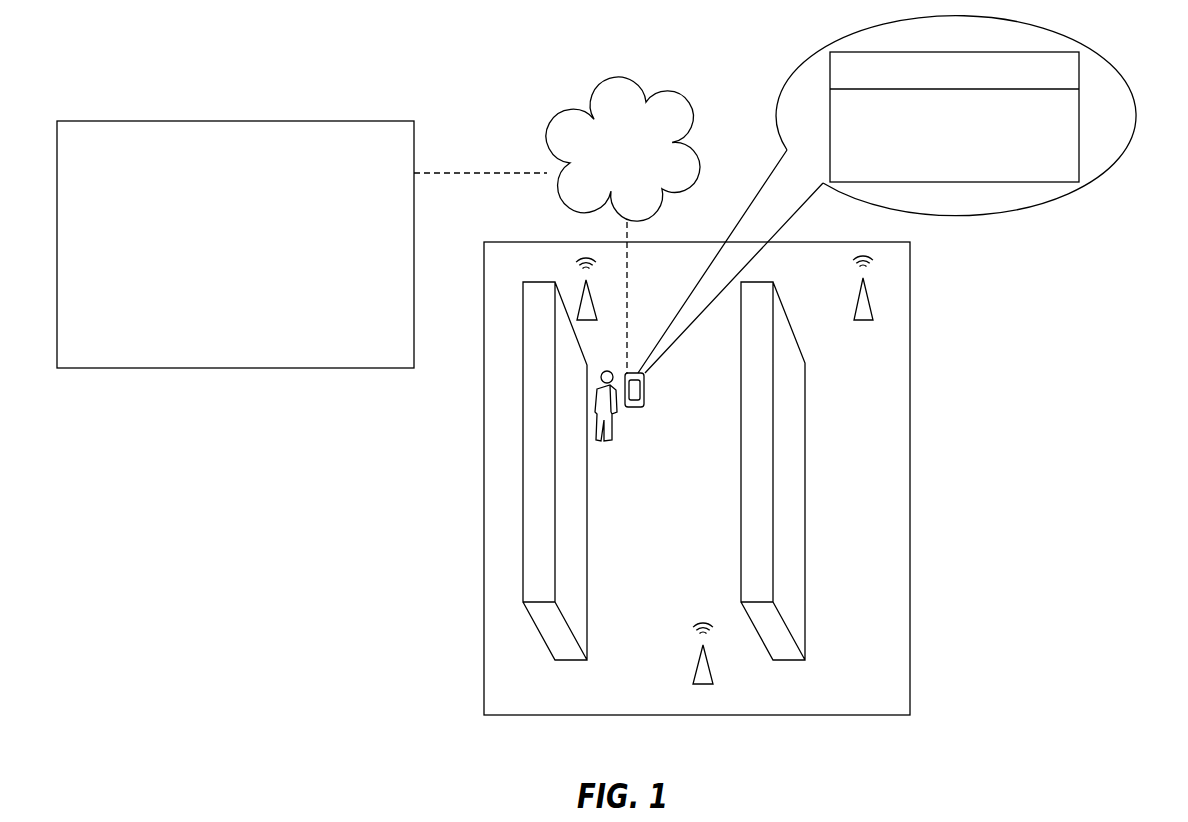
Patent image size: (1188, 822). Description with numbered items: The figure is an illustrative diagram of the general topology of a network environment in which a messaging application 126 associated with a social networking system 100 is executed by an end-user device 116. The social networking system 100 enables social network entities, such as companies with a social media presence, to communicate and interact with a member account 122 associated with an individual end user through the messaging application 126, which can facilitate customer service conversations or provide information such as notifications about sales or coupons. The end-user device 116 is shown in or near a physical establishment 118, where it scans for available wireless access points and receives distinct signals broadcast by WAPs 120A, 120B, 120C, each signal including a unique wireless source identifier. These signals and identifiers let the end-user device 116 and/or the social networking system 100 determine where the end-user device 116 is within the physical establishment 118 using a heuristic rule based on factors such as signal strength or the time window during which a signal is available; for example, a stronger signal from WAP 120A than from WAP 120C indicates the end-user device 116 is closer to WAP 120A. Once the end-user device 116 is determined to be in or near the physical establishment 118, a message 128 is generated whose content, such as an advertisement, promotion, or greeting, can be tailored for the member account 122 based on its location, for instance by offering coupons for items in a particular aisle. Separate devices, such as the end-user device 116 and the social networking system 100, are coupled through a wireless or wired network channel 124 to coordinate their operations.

The social networking system 100 is at (340, 121).
The network channel 124 is at (628, 75).
The messaging application 126 is at (1080, 67).
The message 128 is at (1003, 166).
The physical establishment 118 is at (912, 518).
The WAP 120A is at (593, 302).
The WAP 120B is at (872, 300).
The WAP 120C is at (700, 687).
The end-user device 116 is at (646, 388).
The member account 122 is at (613, 441).